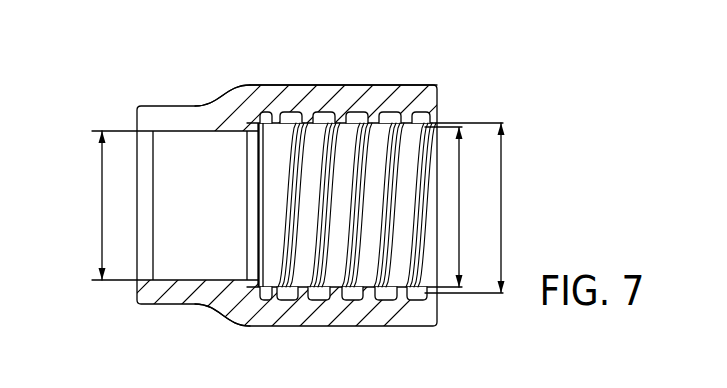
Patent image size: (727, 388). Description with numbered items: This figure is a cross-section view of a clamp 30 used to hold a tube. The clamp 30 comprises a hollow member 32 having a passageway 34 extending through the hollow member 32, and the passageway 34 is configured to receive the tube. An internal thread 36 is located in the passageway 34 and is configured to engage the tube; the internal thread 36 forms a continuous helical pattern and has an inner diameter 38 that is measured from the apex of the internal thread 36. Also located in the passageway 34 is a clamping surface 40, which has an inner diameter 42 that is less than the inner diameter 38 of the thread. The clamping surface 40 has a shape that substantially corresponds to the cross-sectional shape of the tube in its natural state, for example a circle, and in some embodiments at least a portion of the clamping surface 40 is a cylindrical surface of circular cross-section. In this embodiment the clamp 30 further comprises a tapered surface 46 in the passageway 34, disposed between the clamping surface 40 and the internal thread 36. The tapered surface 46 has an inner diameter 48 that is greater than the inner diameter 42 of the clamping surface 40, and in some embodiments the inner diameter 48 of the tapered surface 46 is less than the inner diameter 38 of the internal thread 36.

The clamp 30 is at (428, 52).
The hollow member 32 is at (297, 85).
The passageway 34 is at (175, 210).
The internal thread 36 is at (316, 160).
The inner diameter 38 is at (502, 242).
The clamping surface 40 is at (196, 132).
The inner diameter 42 is at (100, 183).
The tapered surface 46 is at (252, 118).
The inner diameter 48 is at (461, 213).